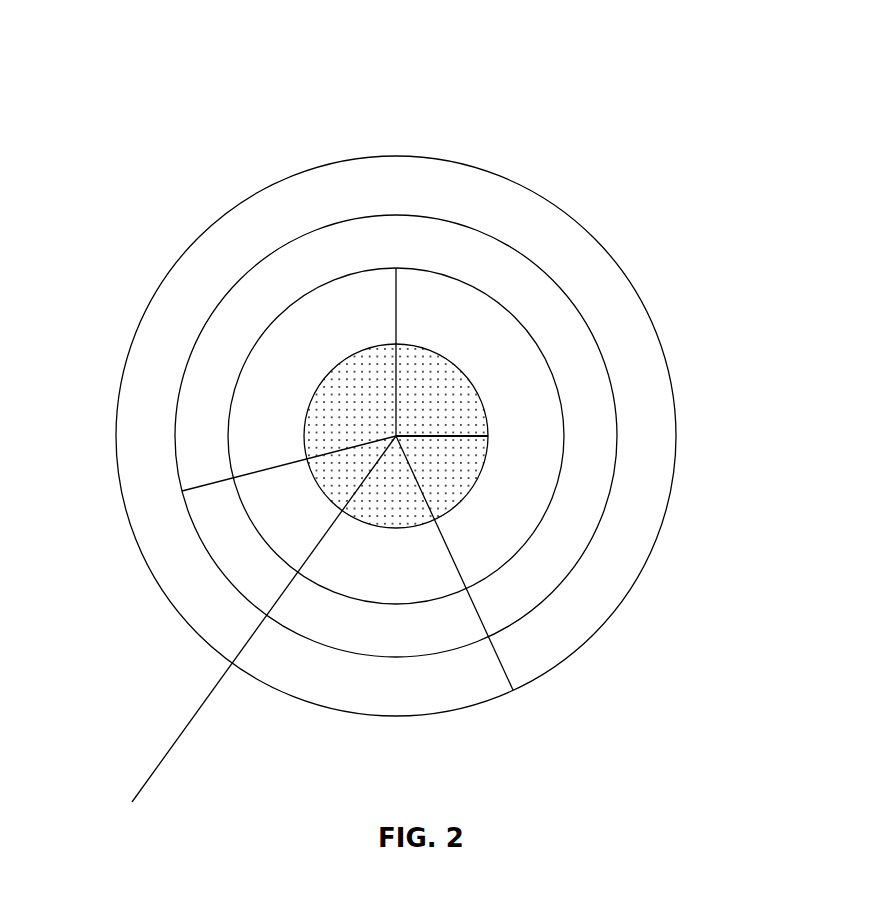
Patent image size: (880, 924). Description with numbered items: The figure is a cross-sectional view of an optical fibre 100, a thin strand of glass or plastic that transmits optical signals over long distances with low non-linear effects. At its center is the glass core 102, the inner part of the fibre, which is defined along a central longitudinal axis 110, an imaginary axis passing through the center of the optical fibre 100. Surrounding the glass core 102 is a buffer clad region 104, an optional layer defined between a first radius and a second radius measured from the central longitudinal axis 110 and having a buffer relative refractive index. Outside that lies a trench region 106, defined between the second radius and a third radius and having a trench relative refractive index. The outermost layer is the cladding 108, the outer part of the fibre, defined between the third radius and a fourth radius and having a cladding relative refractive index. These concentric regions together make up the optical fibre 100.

The optical fibre 100 is at (110, 53).
The glass core 102 is at (438, 372).
The buffer clad region 104 is at (332, 303).
The trench region 106 is at (230, 537).
The cladding 108 is at (593, 592).
The central longitudinal axis 110 is at (196, 724).